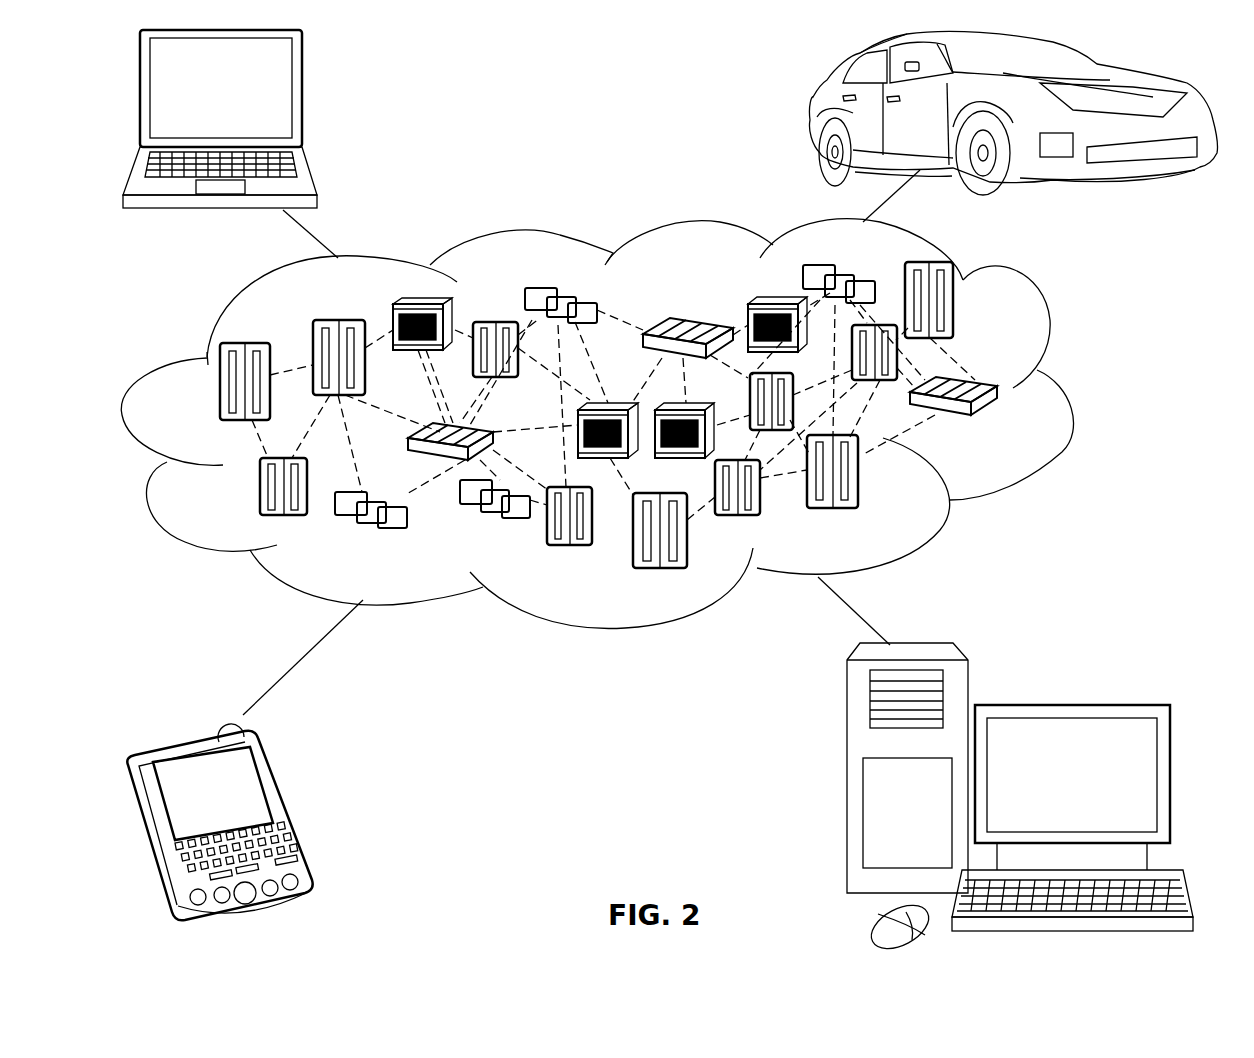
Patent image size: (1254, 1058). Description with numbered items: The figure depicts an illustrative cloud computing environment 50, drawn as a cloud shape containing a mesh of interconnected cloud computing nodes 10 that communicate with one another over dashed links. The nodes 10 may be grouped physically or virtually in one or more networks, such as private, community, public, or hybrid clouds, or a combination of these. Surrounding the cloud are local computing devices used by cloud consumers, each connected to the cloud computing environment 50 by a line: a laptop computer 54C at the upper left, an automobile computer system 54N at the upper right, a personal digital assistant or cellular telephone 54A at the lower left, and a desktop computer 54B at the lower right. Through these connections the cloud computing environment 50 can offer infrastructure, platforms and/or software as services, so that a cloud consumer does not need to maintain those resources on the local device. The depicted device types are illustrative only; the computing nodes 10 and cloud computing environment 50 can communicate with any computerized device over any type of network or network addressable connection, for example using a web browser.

The cloud computing nodes 10 is at (1004, 427).
The cloud computing environment 50 is at (1067, 390).
The personal digital assistant (PDA) or cellular telephone 54A is at (290, 807).
The desktop computer 54B is at (1069, 705).
The laptop computer 54C is at (303, 96).
The automobile computer system 54N is at (812, 114).